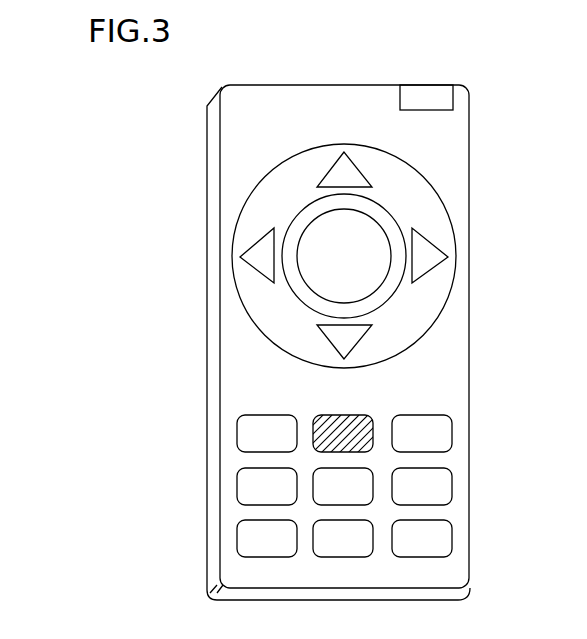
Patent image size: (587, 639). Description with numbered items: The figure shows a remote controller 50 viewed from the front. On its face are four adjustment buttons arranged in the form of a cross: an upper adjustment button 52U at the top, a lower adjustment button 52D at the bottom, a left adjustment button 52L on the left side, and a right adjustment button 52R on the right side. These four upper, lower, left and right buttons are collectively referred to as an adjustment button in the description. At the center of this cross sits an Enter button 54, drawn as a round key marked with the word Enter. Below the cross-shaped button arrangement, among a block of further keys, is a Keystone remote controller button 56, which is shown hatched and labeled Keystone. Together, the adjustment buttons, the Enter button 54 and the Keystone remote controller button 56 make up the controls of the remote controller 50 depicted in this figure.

The remote controller 50 is at (532, 139).
The upper adjustment button 52U is at (345, 170).
The left adjustment button 52L is at (240, 257).
The right adjustment button 52R is at (440, 255).
The lower adjustment button 52D is at (342, 342).
The Enter button 54 is at (360, 283).
The Keystone remote controller button 56 is at (367, 447).